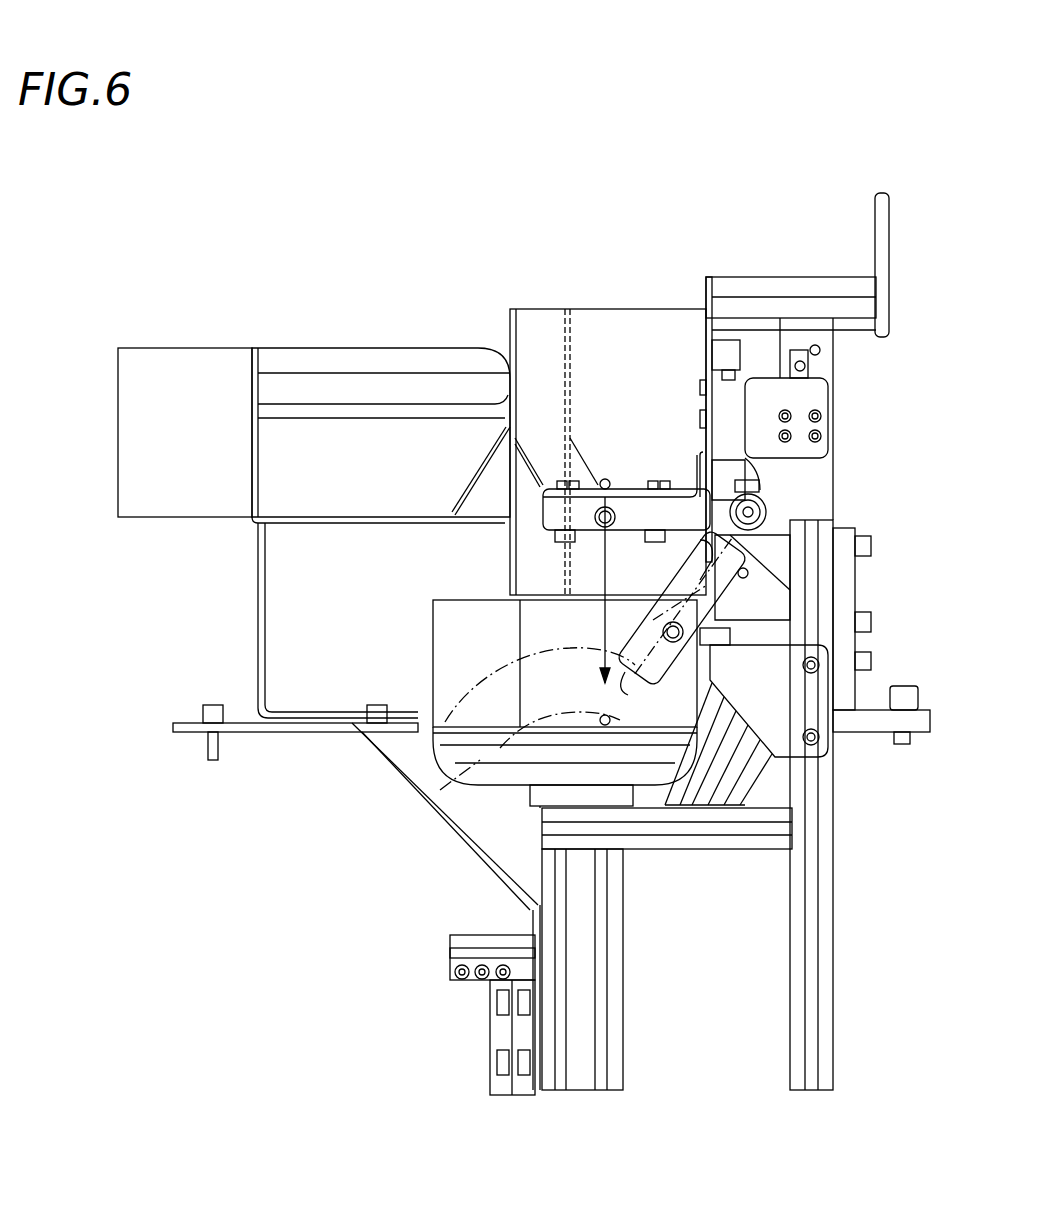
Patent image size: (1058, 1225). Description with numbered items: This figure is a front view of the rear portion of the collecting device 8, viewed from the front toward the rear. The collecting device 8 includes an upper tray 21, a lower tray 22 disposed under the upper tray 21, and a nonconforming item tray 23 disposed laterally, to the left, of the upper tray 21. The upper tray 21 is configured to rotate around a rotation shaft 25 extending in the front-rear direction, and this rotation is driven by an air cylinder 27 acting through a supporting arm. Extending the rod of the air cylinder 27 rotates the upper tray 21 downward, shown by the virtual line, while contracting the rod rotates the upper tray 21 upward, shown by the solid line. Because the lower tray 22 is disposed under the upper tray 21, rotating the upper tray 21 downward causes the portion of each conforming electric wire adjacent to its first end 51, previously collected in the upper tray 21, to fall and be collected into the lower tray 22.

The collecting device 8 is at (430, 222).
The upper tray 21 is at (645, 489).
The lower tray 22 is at (640, 712).
The nonconforming item tray 23 is at (363, 512).
The rotation shaft 25 is at (758, 505).
The air cylinder 27 is at (772, 757).
The first end 51 is at (605, 480).